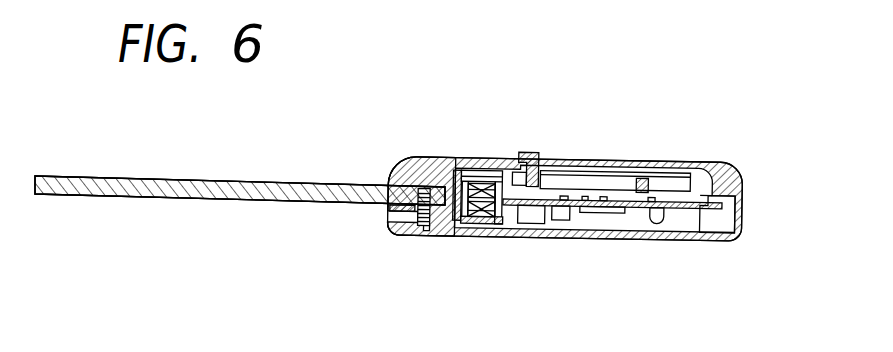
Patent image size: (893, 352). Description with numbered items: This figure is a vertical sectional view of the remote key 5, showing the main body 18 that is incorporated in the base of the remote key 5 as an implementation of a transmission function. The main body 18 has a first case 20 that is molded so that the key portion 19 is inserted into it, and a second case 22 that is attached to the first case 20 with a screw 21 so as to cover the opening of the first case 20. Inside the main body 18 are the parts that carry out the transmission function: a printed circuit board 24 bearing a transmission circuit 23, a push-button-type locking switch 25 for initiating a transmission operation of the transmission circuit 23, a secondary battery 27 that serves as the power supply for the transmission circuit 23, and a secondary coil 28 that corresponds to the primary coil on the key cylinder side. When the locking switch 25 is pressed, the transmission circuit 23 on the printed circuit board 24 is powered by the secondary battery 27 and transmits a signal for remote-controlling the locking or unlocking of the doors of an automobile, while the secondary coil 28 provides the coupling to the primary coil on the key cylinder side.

The remote key 5 is at (378, 228).
The main body 18 is at (730, 161).
The key portion 19 is at (262, 181).
The first case 20 is at (428, 157).
The screw 21 is at (418, 234).
The second case 22 is at (710, 240).
The transmission circuit 23 is at (582, 205).
The printed circuit board 24 is at (664, 217).
The locking switch 25 is at (526, 152).
The secondary battery 27 is at (587, 164).
The secondary coil 28 is at (478, 221).